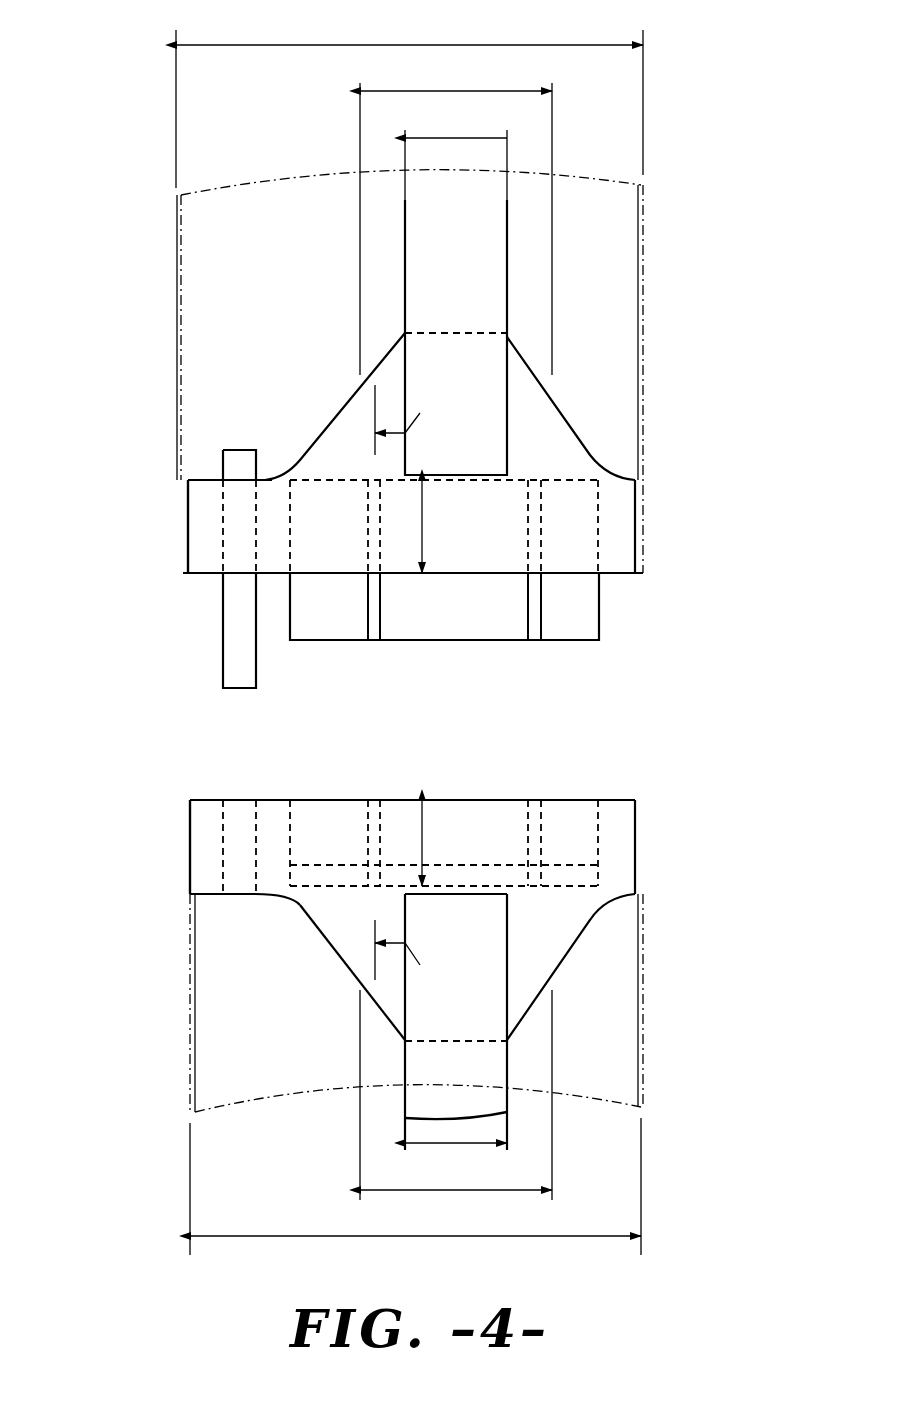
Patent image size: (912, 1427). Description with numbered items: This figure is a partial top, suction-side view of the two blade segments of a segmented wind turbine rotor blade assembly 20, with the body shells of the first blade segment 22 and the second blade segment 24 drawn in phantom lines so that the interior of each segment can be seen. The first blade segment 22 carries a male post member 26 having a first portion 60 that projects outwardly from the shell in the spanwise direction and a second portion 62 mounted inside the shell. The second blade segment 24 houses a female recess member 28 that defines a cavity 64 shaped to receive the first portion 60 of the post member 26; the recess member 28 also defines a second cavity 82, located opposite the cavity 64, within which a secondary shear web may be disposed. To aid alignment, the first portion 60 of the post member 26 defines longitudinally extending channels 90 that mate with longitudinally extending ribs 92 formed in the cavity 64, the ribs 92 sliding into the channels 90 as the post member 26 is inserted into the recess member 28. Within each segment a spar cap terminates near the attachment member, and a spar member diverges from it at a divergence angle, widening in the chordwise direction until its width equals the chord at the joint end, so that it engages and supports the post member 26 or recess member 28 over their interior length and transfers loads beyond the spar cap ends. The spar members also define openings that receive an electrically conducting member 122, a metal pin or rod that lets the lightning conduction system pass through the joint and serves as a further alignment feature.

The rotor blade assembly 20 is at (702, 118).
The first blade segment 22 is at (672, 277).
The second blade segment 24 is at (673, 937).
The post member 26 is at (603, 596).
The recess member 28 is at (612, 838).
The first portion 60 is at (440, 625).
The second portion 62 is at (600, 522).
The cavity 64 is at (292, 828).
The second cavity 82 is at (320, 883).
The channels 90 is at (368, 625).
The ribs 92 is at (383, 812).
The electrically conducting member 122 is at (217, 645).